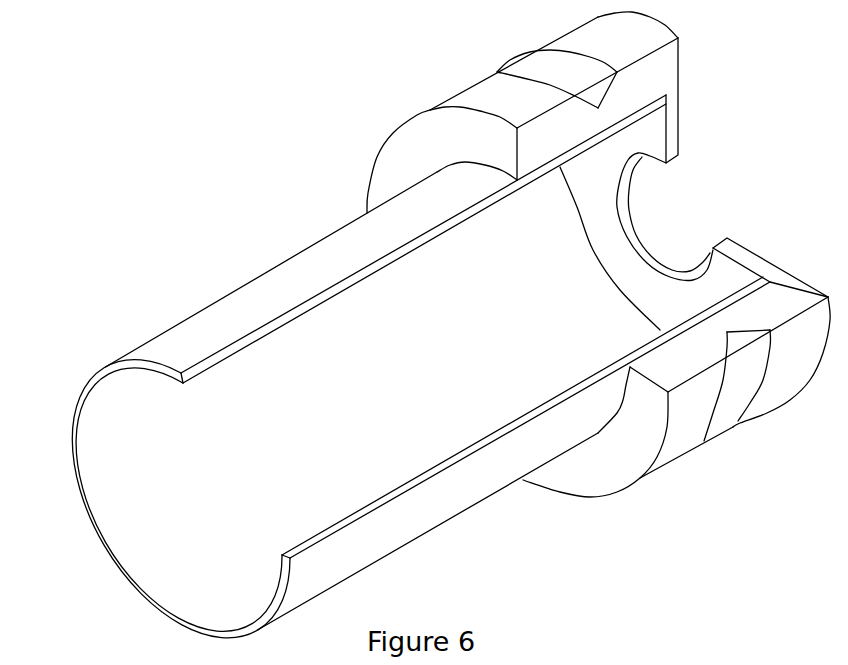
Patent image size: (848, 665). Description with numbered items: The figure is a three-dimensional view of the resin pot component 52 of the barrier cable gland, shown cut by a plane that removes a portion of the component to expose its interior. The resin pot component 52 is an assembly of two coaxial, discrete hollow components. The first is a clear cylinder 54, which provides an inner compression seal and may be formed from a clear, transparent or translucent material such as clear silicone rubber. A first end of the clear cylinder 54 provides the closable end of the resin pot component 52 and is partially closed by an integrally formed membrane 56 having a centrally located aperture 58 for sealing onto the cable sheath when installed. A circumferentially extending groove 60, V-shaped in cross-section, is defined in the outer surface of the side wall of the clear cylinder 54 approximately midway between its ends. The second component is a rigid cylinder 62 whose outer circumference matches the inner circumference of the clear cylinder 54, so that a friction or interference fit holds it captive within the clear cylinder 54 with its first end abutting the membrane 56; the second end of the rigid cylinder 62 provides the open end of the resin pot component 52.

The resin pot component 52 is at (101, 569).
The clear cylinder 54 is at (492, 98).
The membrane 56 is at (725, 275).
The aperture 58 is at (677, 215).
The groove 60 is at (718, 432).
The rigid cylinder 62 is at (258, 287).